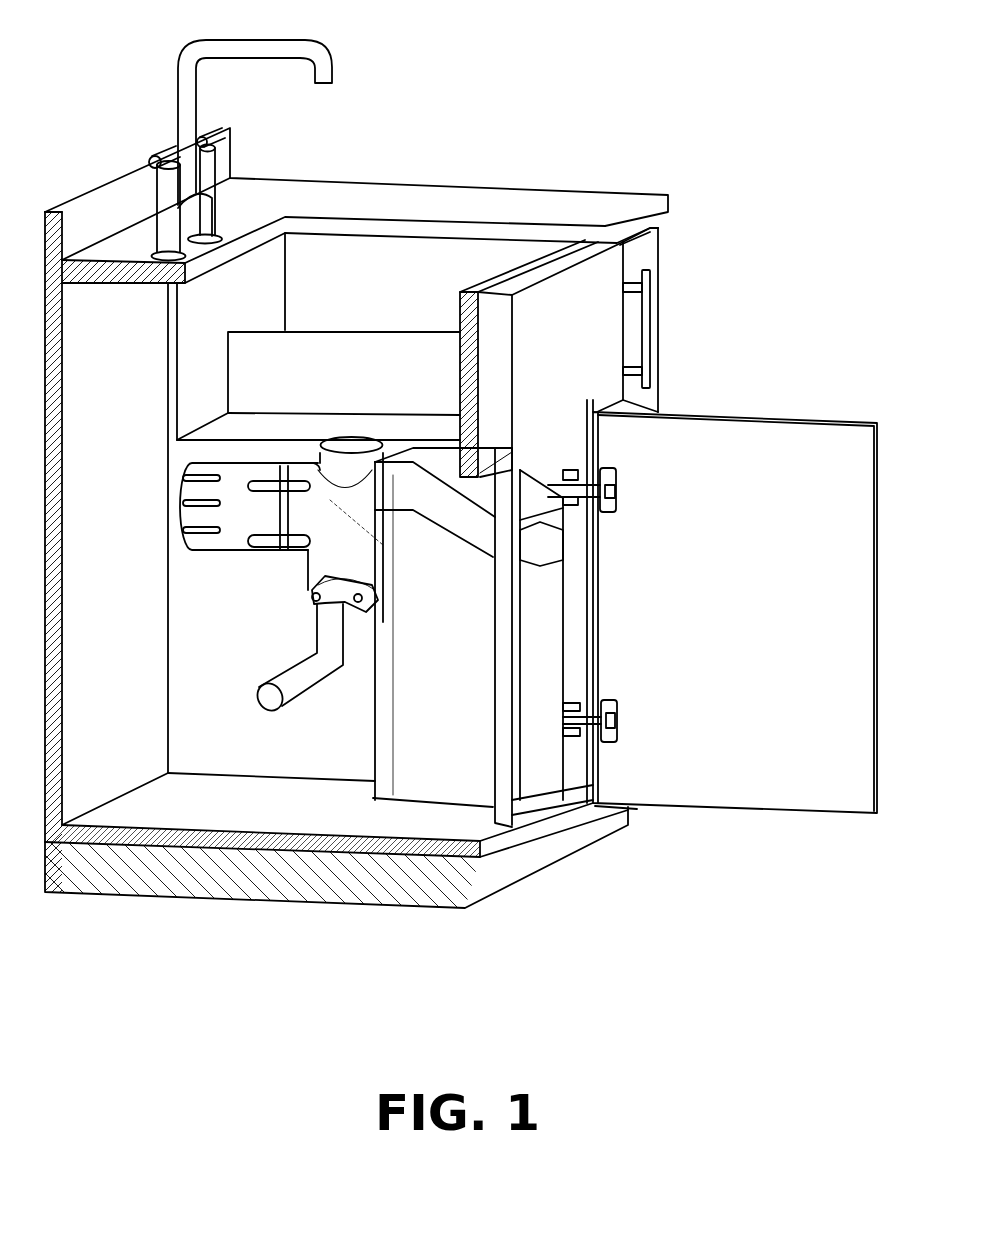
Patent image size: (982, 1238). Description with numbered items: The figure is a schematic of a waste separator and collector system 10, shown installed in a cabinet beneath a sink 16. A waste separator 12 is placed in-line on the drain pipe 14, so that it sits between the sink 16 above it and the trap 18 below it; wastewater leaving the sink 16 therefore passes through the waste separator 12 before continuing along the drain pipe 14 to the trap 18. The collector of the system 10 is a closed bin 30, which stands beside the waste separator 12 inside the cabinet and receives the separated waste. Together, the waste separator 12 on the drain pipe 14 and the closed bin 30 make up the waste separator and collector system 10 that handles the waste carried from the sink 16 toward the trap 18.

The waste separator and collector system 10 is at (423, 435).
The waste separator 12 is at (258, 575).
The drain pipe 14 is at (328, 642).
The sink 16 is at (386, 262).
The trap 18 is at (332, 670).
The closed bin 30 is at (553, 518).